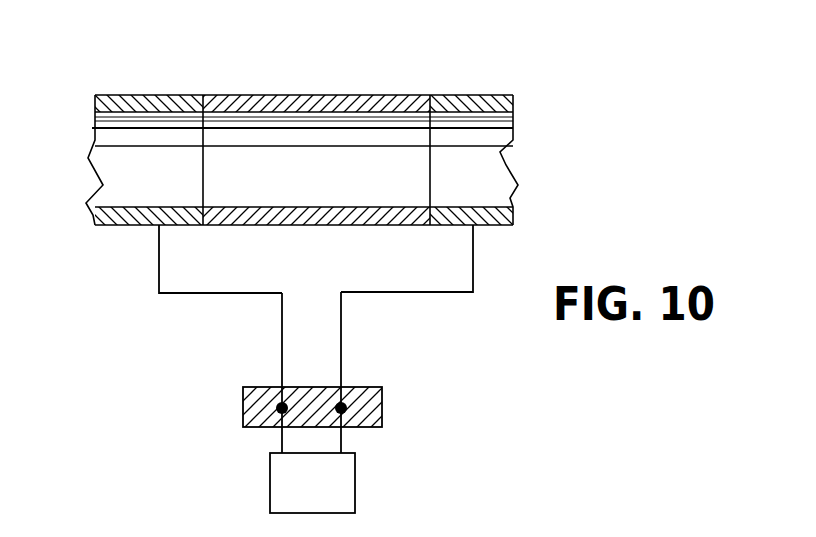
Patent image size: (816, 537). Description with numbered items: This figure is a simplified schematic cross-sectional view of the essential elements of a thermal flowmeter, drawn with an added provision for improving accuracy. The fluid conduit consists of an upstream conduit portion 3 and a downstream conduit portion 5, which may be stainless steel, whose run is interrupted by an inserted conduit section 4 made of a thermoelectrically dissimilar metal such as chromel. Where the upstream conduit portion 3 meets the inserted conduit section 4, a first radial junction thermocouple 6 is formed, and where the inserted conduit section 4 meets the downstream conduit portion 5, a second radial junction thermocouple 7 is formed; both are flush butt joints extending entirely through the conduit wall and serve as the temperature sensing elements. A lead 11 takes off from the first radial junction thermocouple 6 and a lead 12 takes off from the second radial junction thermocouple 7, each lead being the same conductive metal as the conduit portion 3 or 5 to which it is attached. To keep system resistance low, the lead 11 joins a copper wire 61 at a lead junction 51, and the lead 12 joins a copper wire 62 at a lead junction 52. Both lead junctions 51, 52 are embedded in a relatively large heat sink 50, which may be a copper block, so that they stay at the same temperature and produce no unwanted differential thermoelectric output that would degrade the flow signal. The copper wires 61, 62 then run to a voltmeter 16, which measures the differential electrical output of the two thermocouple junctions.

The upstream conduit portion 3 is at (162, 95).
The inserted conduit section 4 is at (338, 95).
The downstream conduit portion 5 is at (492, 95).
The first radial junction thermocouple 6 is at (203, 95).
The second radial junction thermocouple 7 is at (431, 95).
The lead 11 is at (158, 272).
The lead 12 is at (474, 263).
The heat sink 50 is at (383, 407).
The lead junction 51 is at (262, 387).
The lead junction 52 is at (357, 387).
The copper wire 61 is at (280, 438).
The copper wire 62 is at (343, 438).
The voltmeter 16 is at (368, 485).